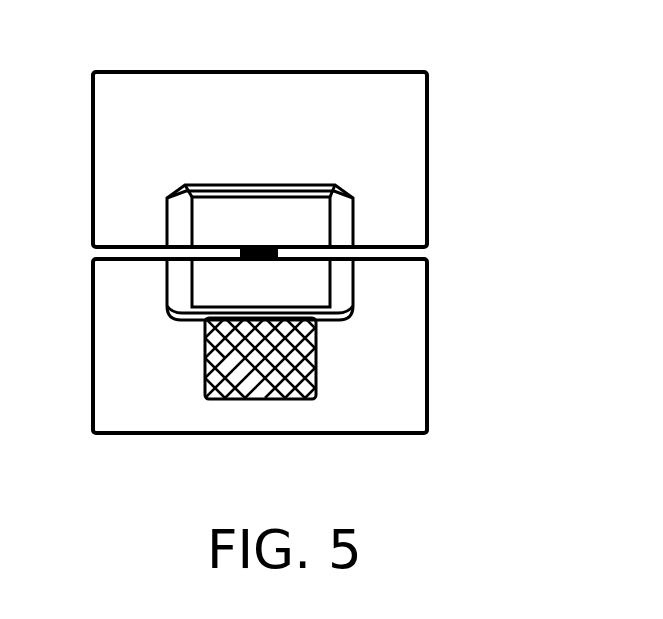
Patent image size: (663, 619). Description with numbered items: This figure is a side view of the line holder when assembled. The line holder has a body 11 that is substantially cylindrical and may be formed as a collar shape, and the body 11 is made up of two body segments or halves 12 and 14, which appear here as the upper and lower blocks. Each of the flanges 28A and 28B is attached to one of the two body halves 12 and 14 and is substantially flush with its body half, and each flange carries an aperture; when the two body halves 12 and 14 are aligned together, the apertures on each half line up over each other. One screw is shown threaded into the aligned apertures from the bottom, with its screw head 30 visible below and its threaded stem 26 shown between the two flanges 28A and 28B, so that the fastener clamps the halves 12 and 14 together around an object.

The body 11 is at (444, 124).
The body half 12 is at (353, 405).
The body half 14 is at (344, 92).
The threaded stem 26 is at (278, 254).
The flange 28A is at (315, 283).
The flange 28B is at (313, 223).
The screw head 30 is at (233, 402).